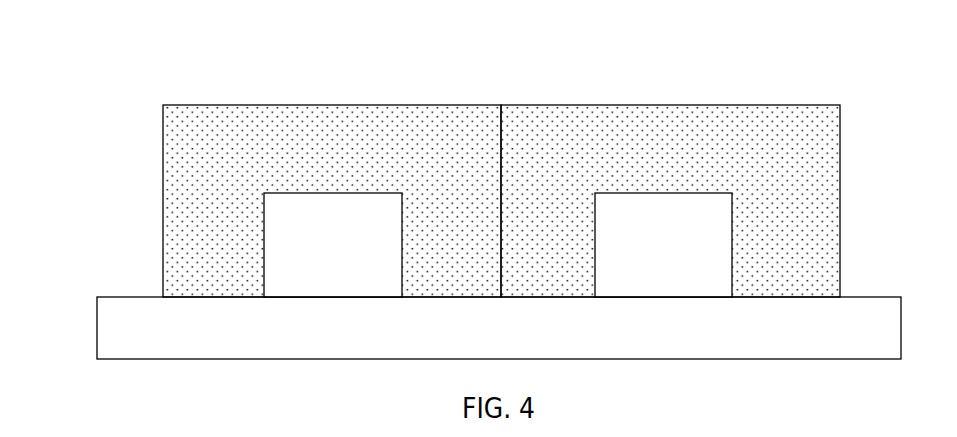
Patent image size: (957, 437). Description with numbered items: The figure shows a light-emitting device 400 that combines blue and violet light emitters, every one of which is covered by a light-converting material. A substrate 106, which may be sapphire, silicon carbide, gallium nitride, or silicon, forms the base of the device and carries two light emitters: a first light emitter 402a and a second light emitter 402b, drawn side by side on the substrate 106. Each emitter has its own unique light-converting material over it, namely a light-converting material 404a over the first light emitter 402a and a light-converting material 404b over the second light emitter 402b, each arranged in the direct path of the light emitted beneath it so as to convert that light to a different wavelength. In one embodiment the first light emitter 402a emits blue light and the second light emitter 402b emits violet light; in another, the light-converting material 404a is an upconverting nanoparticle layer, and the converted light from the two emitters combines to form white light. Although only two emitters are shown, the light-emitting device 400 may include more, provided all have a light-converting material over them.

The light-emitting device 400 is at (122, 52).
The light-converting material 404a is at (388, 138).
The light-converting material 404b is at (683, 138).
The first light emitter 402a is at (353, 254).
The second light emitter 402b is at (690, 254).
The substrate 106 is at (167, 340).